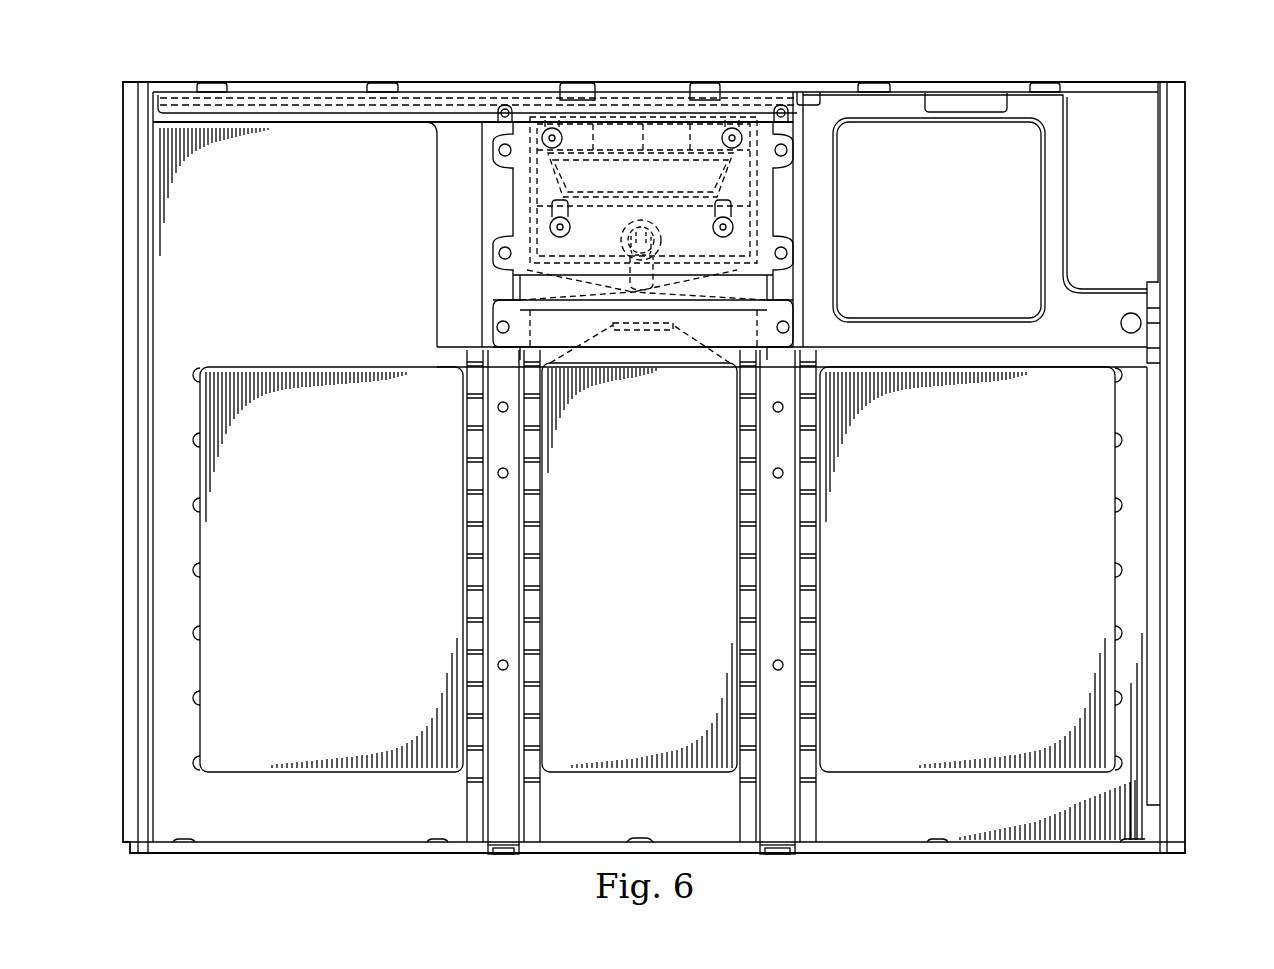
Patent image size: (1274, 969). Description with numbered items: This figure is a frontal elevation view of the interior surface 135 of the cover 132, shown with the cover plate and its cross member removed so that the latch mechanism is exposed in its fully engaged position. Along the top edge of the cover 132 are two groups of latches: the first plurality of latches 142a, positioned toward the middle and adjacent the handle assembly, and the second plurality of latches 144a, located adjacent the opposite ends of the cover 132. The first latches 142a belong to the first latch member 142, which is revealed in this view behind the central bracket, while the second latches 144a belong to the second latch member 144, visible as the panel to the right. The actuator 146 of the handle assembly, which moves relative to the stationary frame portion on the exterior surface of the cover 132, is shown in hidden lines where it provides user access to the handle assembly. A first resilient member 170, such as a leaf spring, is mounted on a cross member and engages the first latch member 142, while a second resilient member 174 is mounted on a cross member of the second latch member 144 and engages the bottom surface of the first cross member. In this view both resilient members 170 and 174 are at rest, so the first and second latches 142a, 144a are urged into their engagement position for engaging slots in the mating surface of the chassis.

The cover 132 is at (1187, 262).
The interior surface 135 is at (988, 580).
The first latch member 142 is at (800, 203).
The first plurality of latches 142a is at (577, 88).
The second latch member 144 is at (1068, 225).
The second plurality of latches 144a is at (212, 82).
The actuator 146 is at (633, 191).
The first resilient member 170 is at (533, 290).
The second resilient member 174 is at (687, 348).